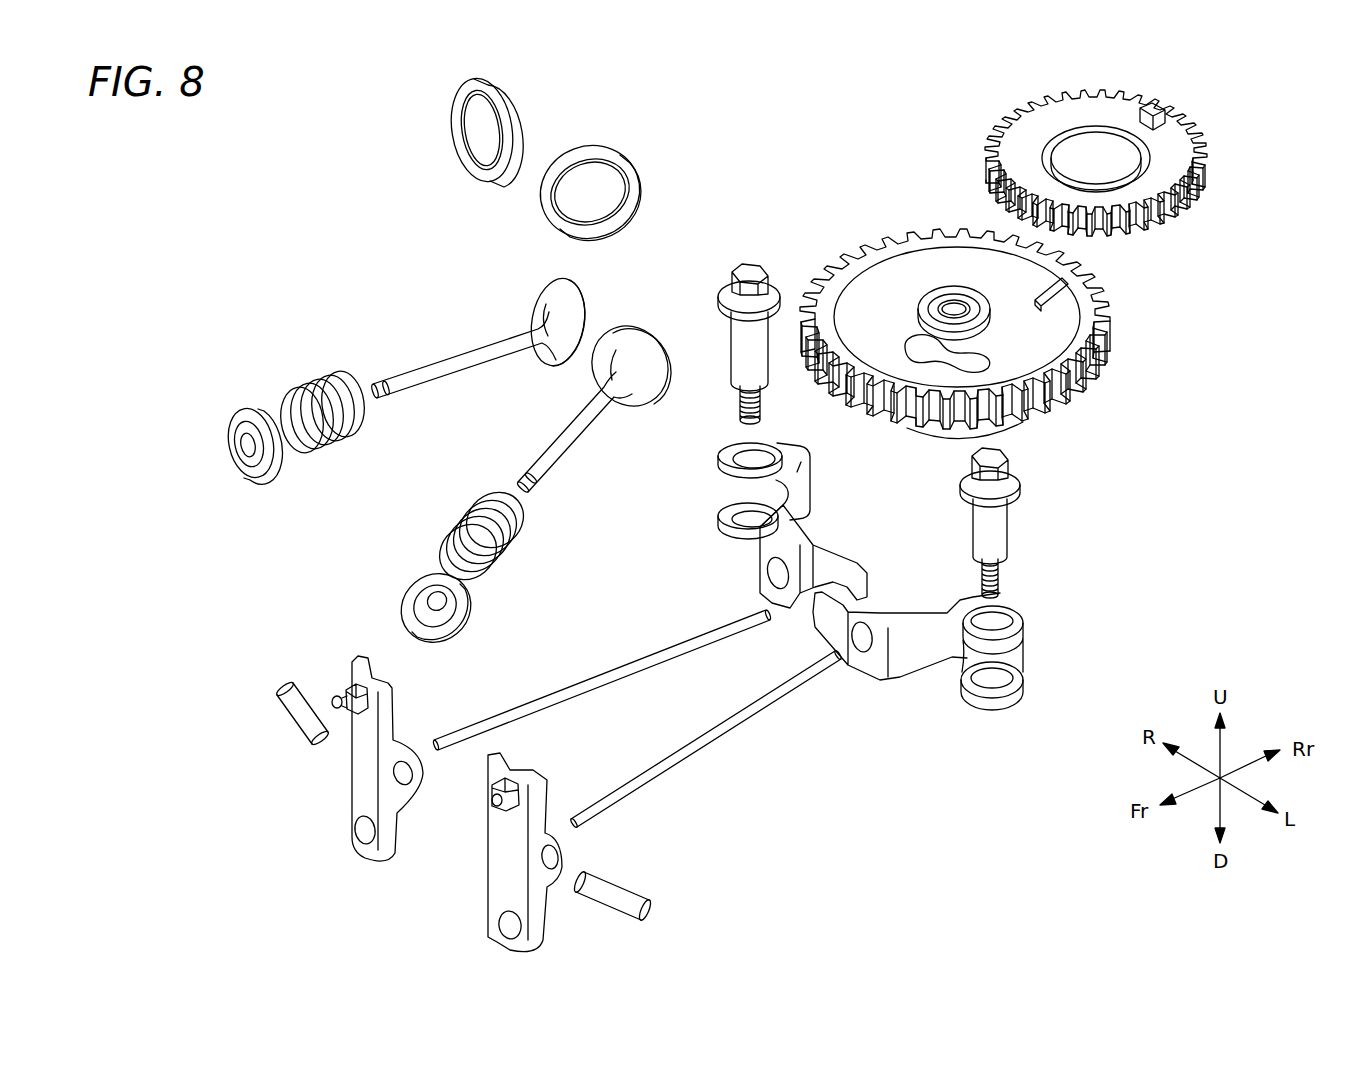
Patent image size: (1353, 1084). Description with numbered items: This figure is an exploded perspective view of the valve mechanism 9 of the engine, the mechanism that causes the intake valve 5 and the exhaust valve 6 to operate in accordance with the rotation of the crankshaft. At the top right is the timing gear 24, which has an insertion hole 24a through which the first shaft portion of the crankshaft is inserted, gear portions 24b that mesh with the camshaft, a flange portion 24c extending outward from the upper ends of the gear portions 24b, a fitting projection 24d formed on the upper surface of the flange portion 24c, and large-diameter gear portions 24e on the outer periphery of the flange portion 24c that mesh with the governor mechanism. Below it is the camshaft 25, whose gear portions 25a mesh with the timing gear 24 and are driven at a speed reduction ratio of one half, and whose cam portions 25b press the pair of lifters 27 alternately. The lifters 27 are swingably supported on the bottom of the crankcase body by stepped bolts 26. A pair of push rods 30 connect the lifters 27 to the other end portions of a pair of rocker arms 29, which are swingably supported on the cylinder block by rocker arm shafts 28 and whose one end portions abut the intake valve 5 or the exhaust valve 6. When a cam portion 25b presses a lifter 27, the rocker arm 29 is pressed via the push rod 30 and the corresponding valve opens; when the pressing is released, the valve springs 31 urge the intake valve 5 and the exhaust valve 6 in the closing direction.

The intake valve 5 is at (573, 432).
The exhaust valve 6 is at (470, 352).
The valve mechanism 9 is at (912, 834).
The timing gear 24 is at (1145, 167).
The insertion hole 24a is at (1078, 150).
The gear portions 24b is at (1108, 236).
The flange portion 24c is at (1110, 100).
The fitting projection 24d is at (1162, 110).
The large-diameter gear portions 24e is at (1207, 153).
The camshaft 25 is at (1009, 302).
The gear portions 25a is at (1110, 348).
The cam portions 25b is at (1022, 433).
The stepped bolts 26 is at (728, 338).
The lifters 27 is at (760, 556).
The rocker arm shafts 28 is at (300, 716).
The rocker arms 29 is at (365, 790).
The push rods 30 is at (622, 681).
The valve springs 31 is at (300, 380).